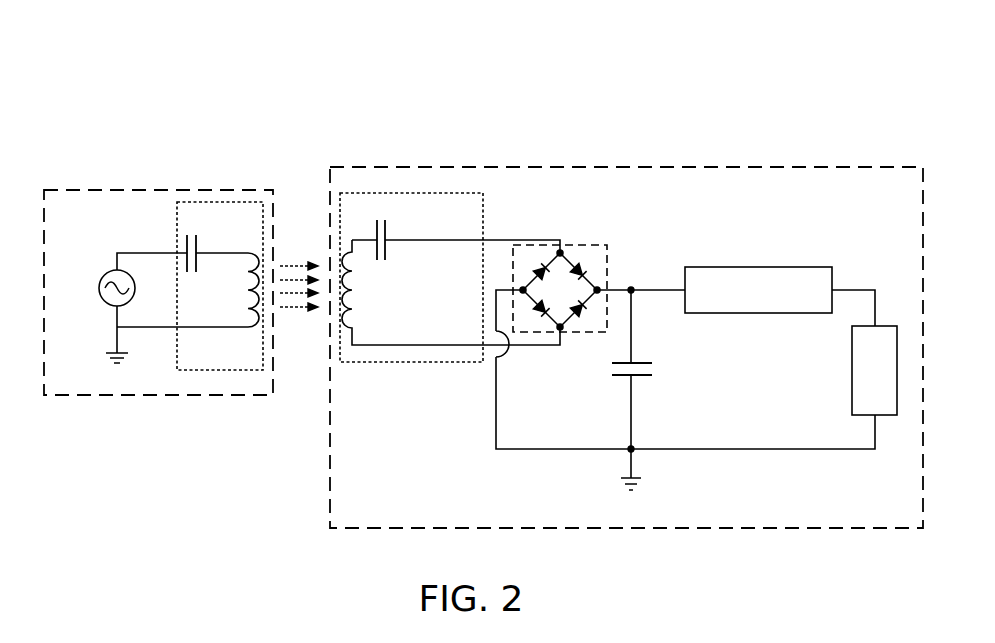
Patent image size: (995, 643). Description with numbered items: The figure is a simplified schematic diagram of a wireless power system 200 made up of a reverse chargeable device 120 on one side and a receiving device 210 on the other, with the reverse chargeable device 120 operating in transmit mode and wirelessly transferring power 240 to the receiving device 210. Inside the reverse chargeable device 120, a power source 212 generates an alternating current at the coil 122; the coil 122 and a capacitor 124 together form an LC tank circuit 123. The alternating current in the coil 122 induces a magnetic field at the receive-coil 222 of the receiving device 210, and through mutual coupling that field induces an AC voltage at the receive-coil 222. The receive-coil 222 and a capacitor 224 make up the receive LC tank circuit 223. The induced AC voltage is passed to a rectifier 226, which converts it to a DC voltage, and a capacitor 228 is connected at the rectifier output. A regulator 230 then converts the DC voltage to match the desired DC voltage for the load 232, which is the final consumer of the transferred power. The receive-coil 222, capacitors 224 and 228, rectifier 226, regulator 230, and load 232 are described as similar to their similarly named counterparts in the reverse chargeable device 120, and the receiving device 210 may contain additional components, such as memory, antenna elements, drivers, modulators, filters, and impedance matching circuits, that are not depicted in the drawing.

The wireless power system 200 is at (590, 76).
The reverse chargeable device 120 is at (153, 190).
The LC tank circuit 123 is at (177, 223).
The capacitor 124 is at (196, 245).
The coil 122 is at (250, 327).
The power source 212 is at (100, 288).
The power 240 is at (301, 264).
The receiving device 210 is at (812, 168).
The receive LC tank circuit 223 is at (408, 363).
The receive-coil 222 is at (353, 325).
The capacitor 224 is at (385, 232).
The rectifier 226 is at (607, 252).
The capacitor 228 is at (652, 370).
The regulator 230 is at (765, 267).
The load 232 is at (852, 372).